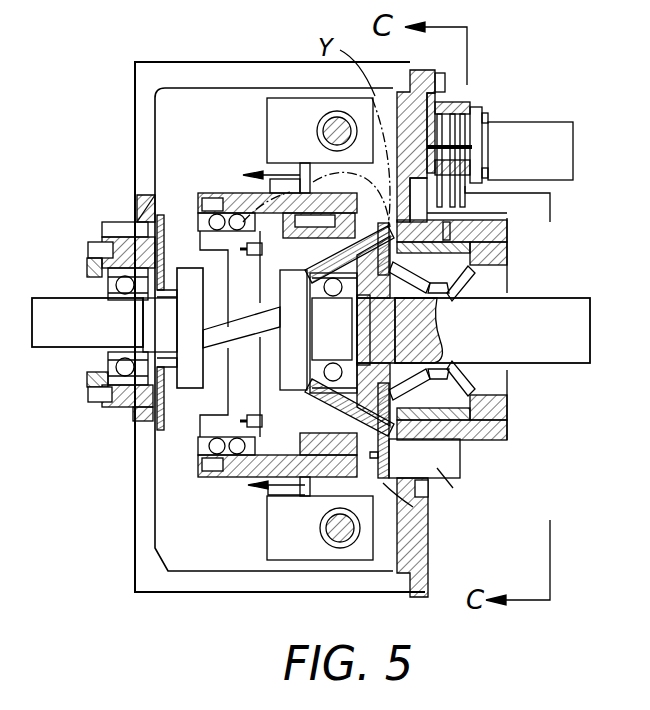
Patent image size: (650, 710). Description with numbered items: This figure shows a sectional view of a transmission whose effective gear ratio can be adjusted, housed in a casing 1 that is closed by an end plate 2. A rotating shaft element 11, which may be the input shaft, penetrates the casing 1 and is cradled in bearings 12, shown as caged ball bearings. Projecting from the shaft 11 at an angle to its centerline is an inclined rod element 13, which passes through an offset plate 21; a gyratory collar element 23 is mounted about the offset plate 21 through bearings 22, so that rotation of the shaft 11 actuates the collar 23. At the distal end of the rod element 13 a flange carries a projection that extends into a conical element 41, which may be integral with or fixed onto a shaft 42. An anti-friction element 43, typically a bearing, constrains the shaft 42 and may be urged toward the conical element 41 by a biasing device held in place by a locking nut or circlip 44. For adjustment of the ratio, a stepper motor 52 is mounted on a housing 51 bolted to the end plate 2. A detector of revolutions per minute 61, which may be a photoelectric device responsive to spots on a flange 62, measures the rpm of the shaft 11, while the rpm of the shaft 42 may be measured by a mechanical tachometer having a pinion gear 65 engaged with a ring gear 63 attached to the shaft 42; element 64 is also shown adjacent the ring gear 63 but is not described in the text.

The casing 1 is at (150, 575).
The end plate 2 is at (413, 558).
The rotating shaft element 11 is at (56, 349).
The bearings 12 is at (132, 412).
The inclined rod element 13 is at (210, 336).
The offset plate 21 is at (230, 385).
The bearings 22 is at (200, 216).
The gyratory collar element 23 is at (220, 194).
The conical element 41 is at (420, 320).
The shaft 42 is at (560, 312).
The anti-friction element 43 is at (458, 386).
The locking nut or circlip 44 is at (508, 416).
The housing 51 is at (475, 100).
The stepper motor 52 is at (548, 135).
The detector of revolutions per minute 61 is at (112, 226).
The flange 62 is at (155, 205).
The ring gear 63 is at (389, 452).
The flange 64 is at (453, 488).
The pinion gear 65 is at (413, 507).